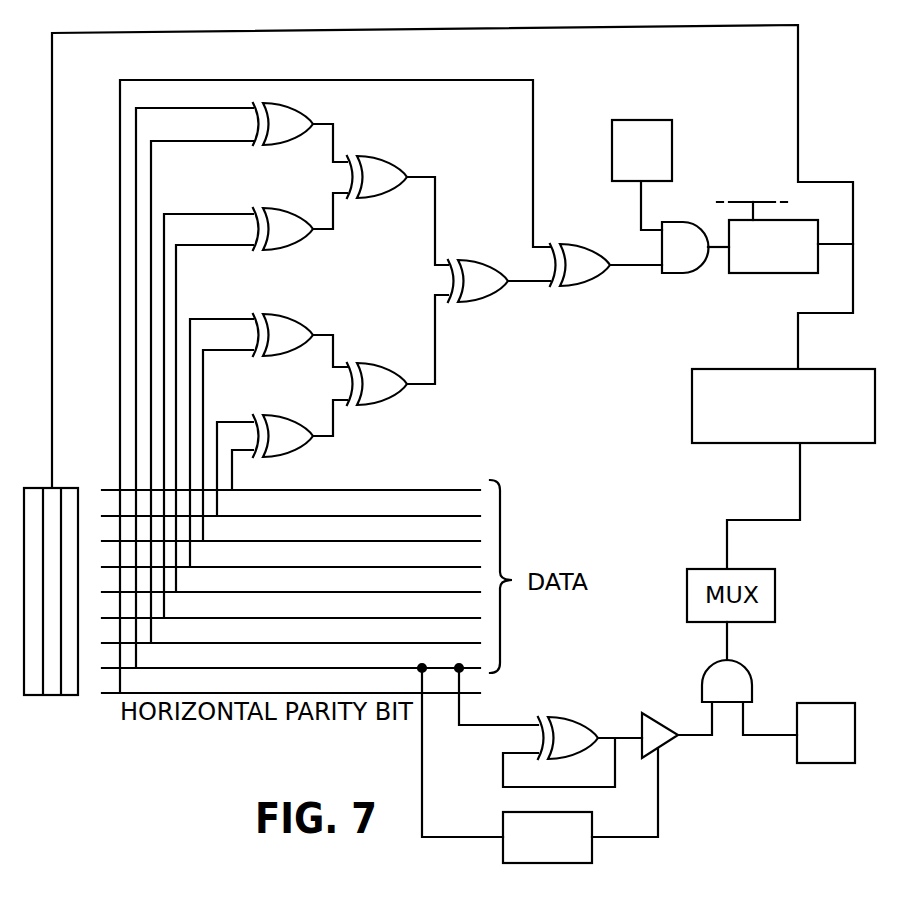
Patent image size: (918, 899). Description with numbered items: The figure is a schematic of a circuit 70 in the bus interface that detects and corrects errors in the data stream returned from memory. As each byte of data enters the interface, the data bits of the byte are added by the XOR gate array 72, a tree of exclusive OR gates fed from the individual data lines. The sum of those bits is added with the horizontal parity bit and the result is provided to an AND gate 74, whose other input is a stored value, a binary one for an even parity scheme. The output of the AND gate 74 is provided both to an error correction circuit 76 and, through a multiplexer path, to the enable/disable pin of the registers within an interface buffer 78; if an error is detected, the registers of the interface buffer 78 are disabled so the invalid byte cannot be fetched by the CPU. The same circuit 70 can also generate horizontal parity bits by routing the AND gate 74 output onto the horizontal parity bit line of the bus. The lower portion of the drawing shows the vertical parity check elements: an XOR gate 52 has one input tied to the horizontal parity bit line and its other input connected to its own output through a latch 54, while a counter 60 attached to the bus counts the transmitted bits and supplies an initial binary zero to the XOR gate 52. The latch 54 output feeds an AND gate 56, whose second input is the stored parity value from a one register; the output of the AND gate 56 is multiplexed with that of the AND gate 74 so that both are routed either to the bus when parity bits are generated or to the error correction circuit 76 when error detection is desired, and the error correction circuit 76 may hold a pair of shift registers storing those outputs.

The XOR gate 52 is at (573, 718).
The latch 54 is at (672, 742).
The AND gate 56 is at (753, 680).
The counter 60 is at (566, 850).
The circuit 70 is at (587, 392).
The XOR gate array 72 is at (380, 291).
The AND gate 74 is at (683, 274).
The error correction circuit 76 is at (737, 369).
The interface buffer 78 is at (50, 696).